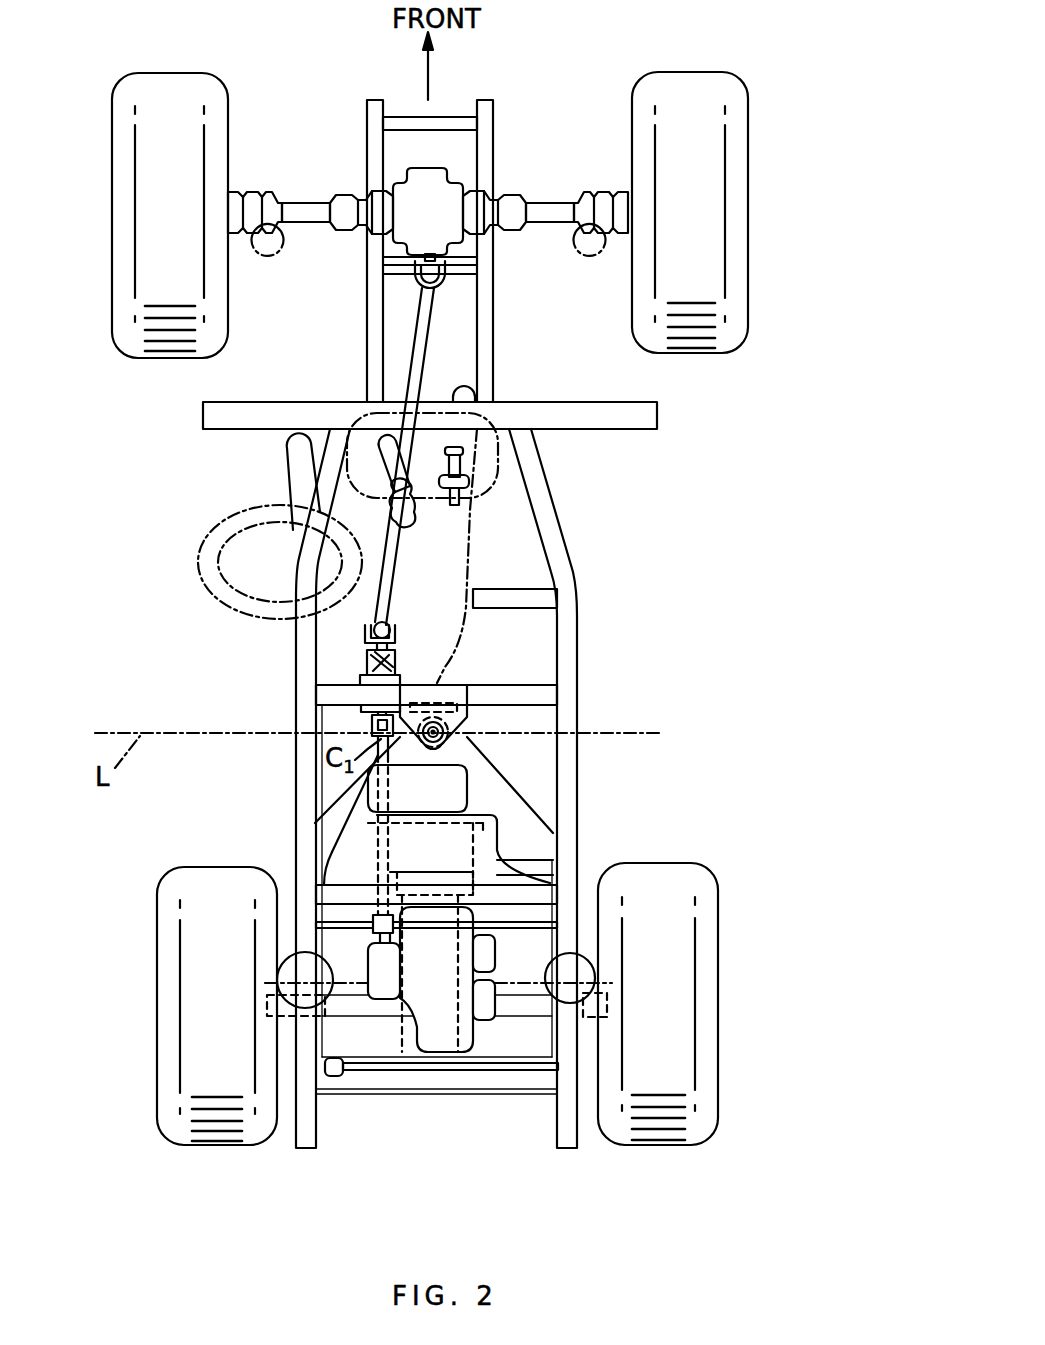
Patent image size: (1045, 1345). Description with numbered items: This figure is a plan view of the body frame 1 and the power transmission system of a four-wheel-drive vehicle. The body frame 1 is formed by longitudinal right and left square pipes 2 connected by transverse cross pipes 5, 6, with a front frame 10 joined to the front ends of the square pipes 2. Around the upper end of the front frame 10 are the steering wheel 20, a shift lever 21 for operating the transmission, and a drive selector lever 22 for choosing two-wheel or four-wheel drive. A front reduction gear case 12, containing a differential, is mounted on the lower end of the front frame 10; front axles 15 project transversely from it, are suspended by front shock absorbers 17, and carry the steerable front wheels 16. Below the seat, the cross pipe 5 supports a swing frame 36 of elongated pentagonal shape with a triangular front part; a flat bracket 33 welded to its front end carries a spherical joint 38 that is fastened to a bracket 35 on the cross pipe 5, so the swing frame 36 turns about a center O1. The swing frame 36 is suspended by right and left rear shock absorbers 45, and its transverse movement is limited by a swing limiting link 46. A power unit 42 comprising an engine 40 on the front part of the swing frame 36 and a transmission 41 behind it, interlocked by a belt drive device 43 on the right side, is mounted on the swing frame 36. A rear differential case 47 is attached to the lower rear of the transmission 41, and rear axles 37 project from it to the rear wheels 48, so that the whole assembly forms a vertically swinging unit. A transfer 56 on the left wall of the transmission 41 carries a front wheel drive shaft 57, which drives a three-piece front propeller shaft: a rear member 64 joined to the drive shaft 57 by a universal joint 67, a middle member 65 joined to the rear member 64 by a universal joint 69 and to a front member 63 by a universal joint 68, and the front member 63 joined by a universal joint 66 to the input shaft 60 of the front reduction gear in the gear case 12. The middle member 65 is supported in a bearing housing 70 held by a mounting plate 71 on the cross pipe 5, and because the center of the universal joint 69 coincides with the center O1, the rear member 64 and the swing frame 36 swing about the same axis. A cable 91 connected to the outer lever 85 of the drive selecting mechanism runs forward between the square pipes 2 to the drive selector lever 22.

The body frame 1 is at (594, 565).
The square pipes 2 is at (578, 645).
The cross pipe 5 is at (557, 692).
The cross pipe 6 is at (560, 897).
The front frame 10 is at (336, 106).
The front reduction gear case 12 is at (428, 178).
The front axles 15 is at (308, 207).
The front wheels 16 is at (163, 92).
The front shock absorbers 17 is at (270, 250).
The steering wheel 20 is at (222, 530).
The shift lever 21 is at (390, 547).
The drive selector lever 22 is at (460, 480).
The bracket 33 is at (470, 772).
The bracket 35 is at (470, 692).
The swing frame 36 is at (505, 800).
The rear axles 37 is at (377, 1012).
The spherical joint 38 is at (434, 713).
The engine 40 is at (465, 840).
The transmission 41 is at (447, 936).
The power unit 42 is at (510, 962).
The belt drive device 43 is at (553, 880).
The rear shock absorbers 45 is at (298, 983).
The swing limiting link 46 is at (338, 1068).
The rear differential case 47 is at (435, 1028).
The rear wheels 48 is at (215, 1140).
The transfer 56 is at (377, 967).
The front wheel drive shaft 57 is at (380, 938).
The input shaft 60 is at (425, 258).
The front member 63 is at (415, 338).
The rear member 64 is at (367, 852).
The middle member 65 is at (365, 642).
The universal joint 66 is at (447, 287).
The universal joint 67 is at (373, 924).
The universal joint 68 is at (388, 621).
The universal joint 69 is at (372, 725).
The bearing housing 70 is at (360, 679).
The mounting plate 71 is at (370, 708).
The outer lever 85 is at (392, 650).
The cable 91 is at (463, 580).
The center of swing motion O1 is at (448, 733).